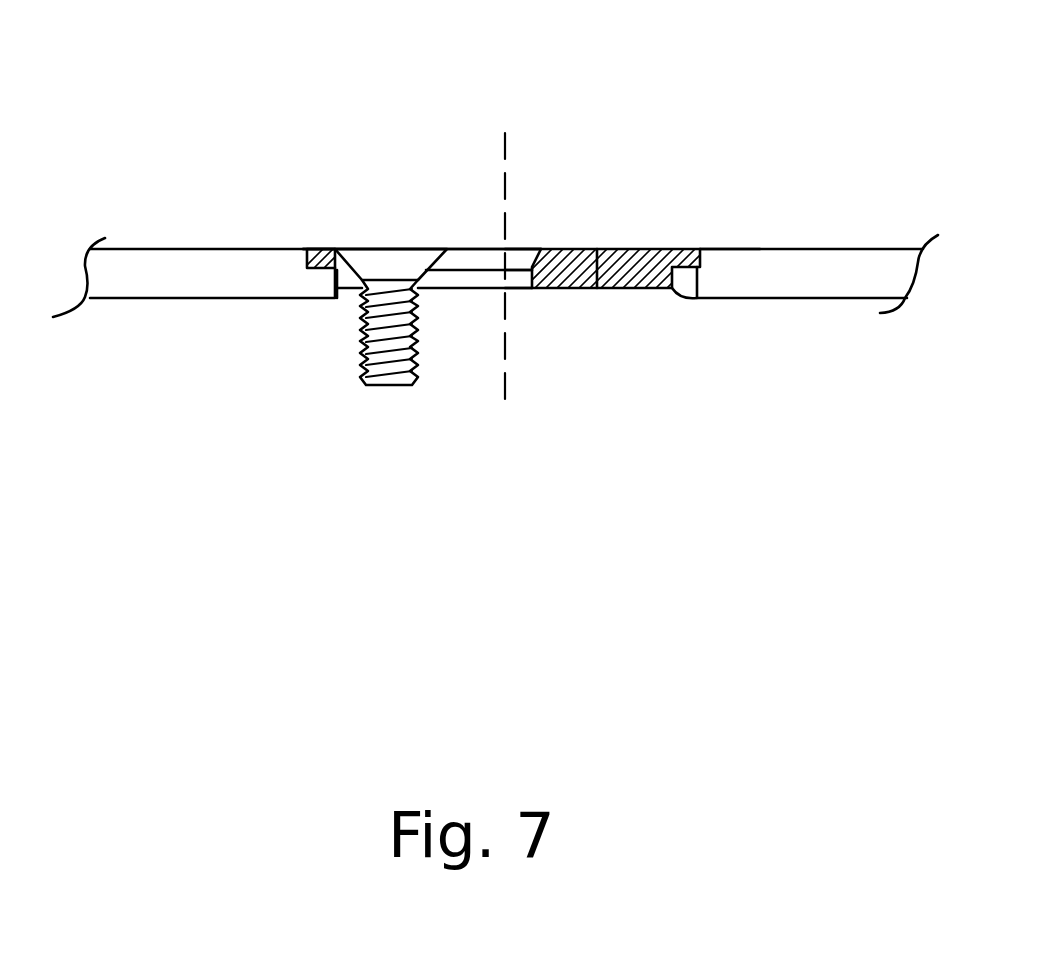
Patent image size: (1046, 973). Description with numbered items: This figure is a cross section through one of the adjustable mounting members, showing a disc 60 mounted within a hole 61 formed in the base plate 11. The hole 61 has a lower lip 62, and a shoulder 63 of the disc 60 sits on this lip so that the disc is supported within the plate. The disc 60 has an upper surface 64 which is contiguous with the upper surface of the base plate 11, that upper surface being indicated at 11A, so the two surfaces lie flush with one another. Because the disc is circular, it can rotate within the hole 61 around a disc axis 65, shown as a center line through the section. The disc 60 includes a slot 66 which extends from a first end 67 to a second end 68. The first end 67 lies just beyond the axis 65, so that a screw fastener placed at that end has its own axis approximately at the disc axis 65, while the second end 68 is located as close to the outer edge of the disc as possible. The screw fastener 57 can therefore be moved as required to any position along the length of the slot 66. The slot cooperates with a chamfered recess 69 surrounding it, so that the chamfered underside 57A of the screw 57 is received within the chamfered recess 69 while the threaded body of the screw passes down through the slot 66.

The base plate 11 is at (183, 268).
The upper surface of the base plate 11A is at (792, 267).
The screw fastener 57 is at (422, 233).
The chamfered underside of the screw 57A is at (457, 250).
The disc 60 is at (628, 228).
The hole 61 is at (754, 242).
The lower lip 62 is at (676, 290).
The shoulder 63 is at (322, 247).
The upper surface of the disc 64 is at (600, 248).
The disc axis 65 is at (505, 397).
The slot 66 is at (457, 277).
The first end of the slot 67 is at (520, 290).
The second end of the slot 68 is at (353, 293).
The chamfered recess 69 is at (518, 253).